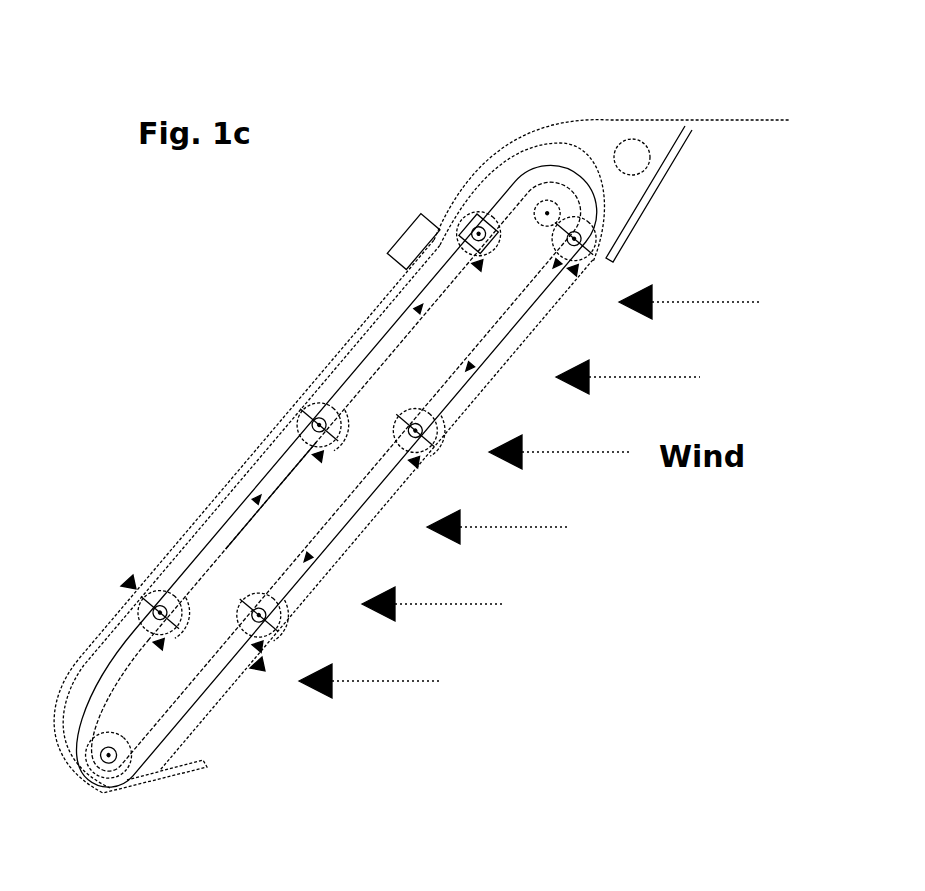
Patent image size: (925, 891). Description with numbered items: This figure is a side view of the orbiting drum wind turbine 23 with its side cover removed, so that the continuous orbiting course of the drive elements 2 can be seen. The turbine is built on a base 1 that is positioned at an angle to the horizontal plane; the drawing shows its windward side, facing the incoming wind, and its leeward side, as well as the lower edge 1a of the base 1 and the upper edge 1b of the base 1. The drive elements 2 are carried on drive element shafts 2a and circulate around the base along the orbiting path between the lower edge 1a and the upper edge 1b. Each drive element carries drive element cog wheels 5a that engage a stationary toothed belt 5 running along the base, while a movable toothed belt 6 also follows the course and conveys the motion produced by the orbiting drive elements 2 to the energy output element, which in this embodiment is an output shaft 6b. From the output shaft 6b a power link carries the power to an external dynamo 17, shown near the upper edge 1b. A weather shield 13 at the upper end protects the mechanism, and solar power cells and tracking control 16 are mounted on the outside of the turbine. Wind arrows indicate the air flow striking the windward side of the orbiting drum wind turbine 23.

The base 1 is at (453, 312).
The lower edge 1a is at (93, 735).
The upper edge 1b is at (560, 198).
The drive elements 2 is at (318, 418).
The drive element shafts 2a is at (140, 613).
The stationary toothed belt 5 is at (275, 493).
The drive element cog wheels 5a is at (300, 427).
The movable toothed belt 6 is at (212, 533).
The output shaft 6b is at (566, 215).
The weather shield 13 is at (655, 119).
The solar power cells and tracking control 16 is at (400, 237).
The external dynamo 17 is at (652, 158).
The orbiting drum wind turbine 23 is at (221, 318).